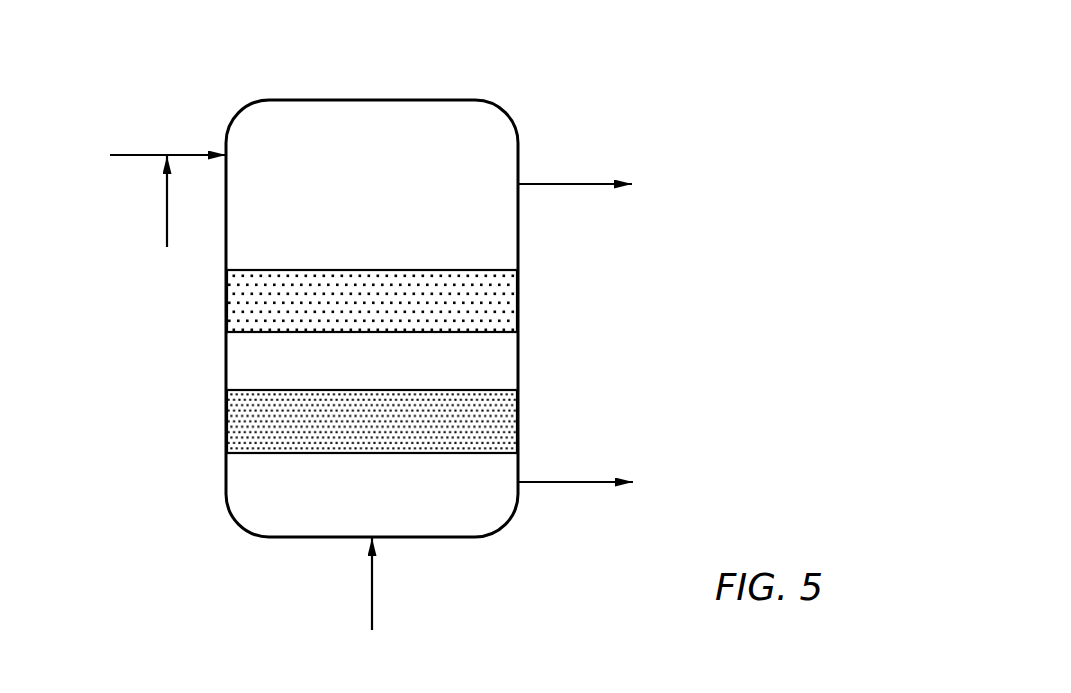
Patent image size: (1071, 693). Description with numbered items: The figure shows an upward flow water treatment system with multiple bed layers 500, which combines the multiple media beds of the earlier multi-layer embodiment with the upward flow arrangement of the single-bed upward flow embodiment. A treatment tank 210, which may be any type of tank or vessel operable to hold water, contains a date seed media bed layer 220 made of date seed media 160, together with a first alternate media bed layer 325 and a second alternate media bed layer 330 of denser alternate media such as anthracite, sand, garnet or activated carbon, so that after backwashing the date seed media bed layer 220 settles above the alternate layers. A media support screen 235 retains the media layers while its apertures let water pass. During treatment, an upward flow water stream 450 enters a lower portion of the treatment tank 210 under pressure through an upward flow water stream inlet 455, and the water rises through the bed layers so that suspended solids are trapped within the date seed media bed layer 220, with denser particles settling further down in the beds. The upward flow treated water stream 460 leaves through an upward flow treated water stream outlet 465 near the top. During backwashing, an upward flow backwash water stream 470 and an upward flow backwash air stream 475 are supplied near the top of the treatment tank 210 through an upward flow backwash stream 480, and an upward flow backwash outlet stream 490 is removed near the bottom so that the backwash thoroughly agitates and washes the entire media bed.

The upward flow water treatment system with multiple bed layers 500 is at (678, 52).
The treatment tank 210 is at (342, 100).
The date seed media 160 is at (315, 285).
The date seed media bed layer 220 is at (226, 305).
The first alternate media bed layer 325 is at (226, 360).
The second alternate media bed layer 330 is at (226, 420).
The media support screen 235 is at (259, 453).
The upward flow backwash water stream 470 is at (137, 155).
The upward flow backwash stream 480 is at (188, 155).
The upward flow backwash air stream 475 is at (167, 218).
The upward flow treated water stream 460 is at (562, 184).
The upward flow treated water stream outlet 465 is at (520, 186).
The upward flow backwash outlet stream 490 is at (592, 482).
The upward flow water stream 450 is at (372, 615).
The upward flow water stream inlet 455 is at (370, 538).